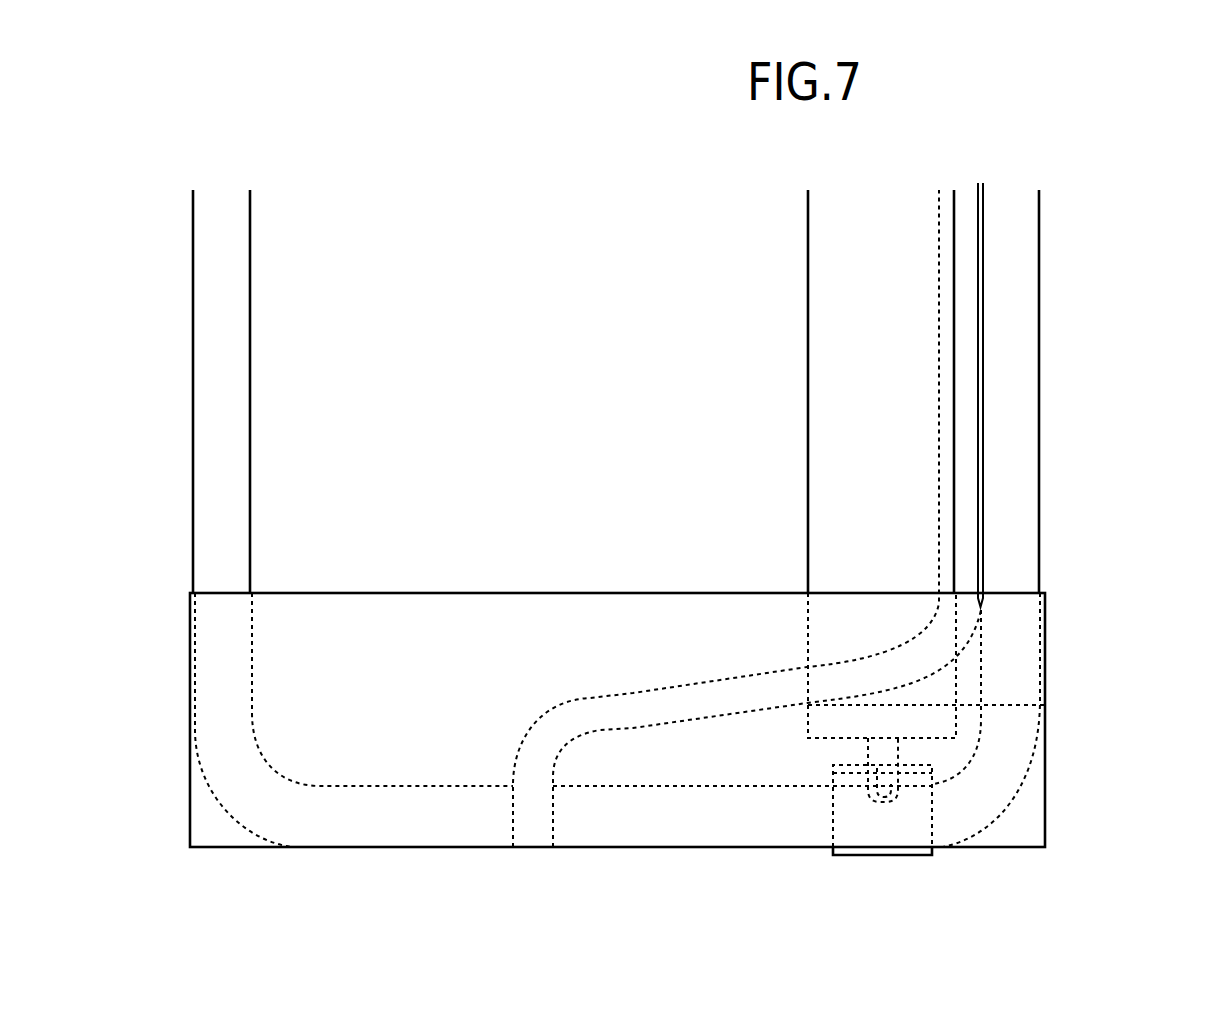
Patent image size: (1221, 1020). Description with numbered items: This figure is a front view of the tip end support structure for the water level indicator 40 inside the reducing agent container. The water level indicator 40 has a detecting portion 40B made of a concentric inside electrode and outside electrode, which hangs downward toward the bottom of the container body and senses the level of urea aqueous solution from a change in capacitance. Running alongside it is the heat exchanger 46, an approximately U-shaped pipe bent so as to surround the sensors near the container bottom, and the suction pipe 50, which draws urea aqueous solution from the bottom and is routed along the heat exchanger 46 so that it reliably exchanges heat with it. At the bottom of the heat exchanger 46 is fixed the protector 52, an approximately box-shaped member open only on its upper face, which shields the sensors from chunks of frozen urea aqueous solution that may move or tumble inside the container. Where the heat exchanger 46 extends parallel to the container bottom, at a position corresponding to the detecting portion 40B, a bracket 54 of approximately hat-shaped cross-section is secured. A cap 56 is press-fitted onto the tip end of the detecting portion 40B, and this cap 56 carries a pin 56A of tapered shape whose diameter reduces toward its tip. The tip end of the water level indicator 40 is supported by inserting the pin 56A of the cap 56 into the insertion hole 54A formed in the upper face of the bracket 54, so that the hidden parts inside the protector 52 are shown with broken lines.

The water level indicator 40 is at (783, 298).
The detecting portion 40B is at (823, 405).
The heat exchanger 46 is at (1024, 248).
The suction pipe 50 is at (635, 690).
The protector 52 is at (414, 592).
The bracket 54 is at (902, 827).
The insertion hole 54A is at (868, 802).
The cap 56 is at (939, 721).
The pin 56A is at (892, 749).